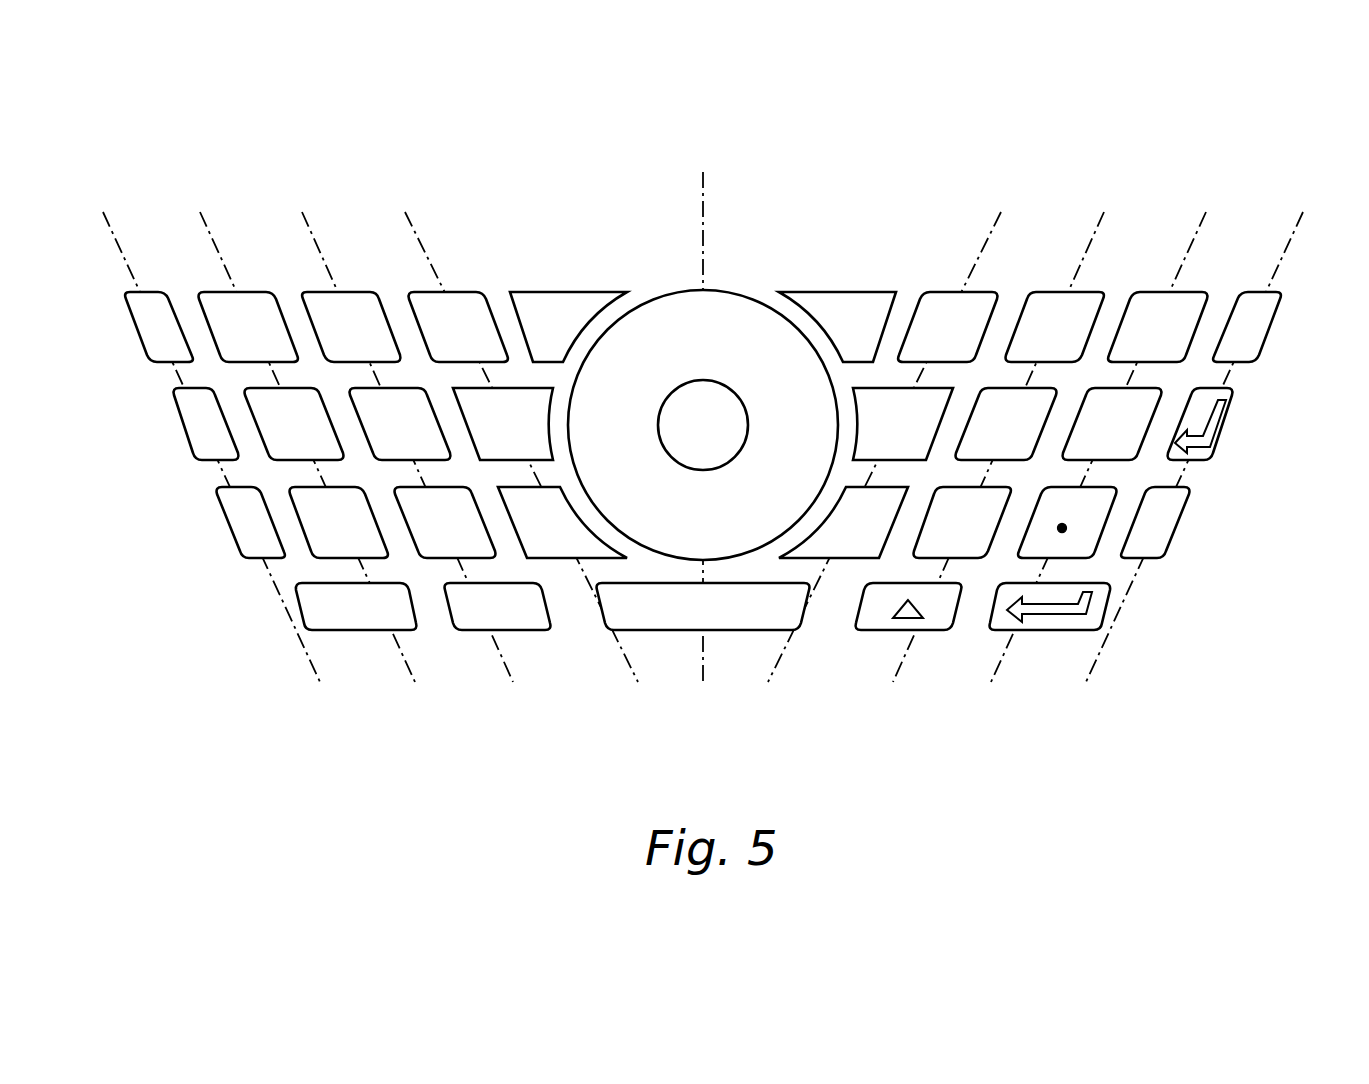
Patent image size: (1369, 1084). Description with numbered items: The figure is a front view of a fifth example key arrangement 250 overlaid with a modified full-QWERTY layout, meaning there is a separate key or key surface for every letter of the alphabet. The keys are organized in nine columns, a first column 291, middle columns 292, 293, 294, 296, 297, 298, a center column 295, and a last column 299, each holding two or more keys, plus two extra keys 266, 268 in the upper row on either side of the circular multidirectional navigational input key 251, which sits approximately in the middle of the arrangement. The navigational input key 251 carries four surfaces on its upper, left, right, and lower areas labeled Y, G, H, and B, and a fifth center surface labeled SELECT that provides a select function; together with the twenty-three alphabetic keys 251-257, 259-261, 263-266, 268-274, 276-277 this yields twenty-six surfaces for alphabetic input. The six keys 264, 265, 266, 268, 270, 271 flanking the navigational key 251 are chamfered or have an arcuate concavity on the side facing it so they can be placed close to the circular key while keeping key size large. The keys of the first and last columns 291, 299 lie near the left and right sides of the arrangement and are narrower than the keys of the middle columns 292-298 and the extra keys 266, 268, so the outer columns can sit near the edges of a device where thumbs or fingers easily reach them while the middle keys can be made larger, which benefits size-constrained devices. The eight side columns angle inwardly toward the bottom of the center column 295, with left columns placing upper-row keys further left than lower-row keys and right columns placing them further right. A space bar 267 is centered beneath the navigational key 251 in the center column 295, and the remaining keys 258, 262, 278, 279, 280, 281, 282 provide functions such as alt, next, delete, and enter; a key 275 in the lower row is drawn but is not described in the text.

The fifth example key arrangement 250 is at (262, 676).
The multidirectional navigational input key 251 is at (725, 348).
The alphabetic input key 252 is at (137, 331).
The alphabetic input key 253 is at (180, 410).
The alphabetic input key 254 is at (224, 515).
The alphabetic input key 255 is at (245, 292).
The alphabetic input key 256 is at (307, 388).
The alphabetic input key 257 is at (310, 555).
The function key 258 is at (365, 631).
The alphabetic input key 259 is at (350, 292).
The alphabetic input key 260 is at (412, 388).
The alphabetic input key 261 is at (425, 560).
The function key 262 is at (483, 632).
The alphabetic input key 263 is at (462, 292).
The alphabetic input key 264 is at (527, 388).
The alphabetic input key 265 is at (550, 560).
The extra key 266 is at (572, 292).
The space bar 267 is at (732, 630).
The extra key 268 is at (833, 292).
The alphabetic input key 269 is at (942, 292).
The alphabetic input key 270 is at (880, 388).
The alphabetic input key 271 is at (850, 560).
The alphabetic input key 272 is at (1062, 292).
The alphabetic input key 273 is at (987, 388).
The alphabetic input key 274 is at (978, 560).
The shift key 275 is at (920, 630).
The alphabetic input key 276 is at (1162, 292).
The alphabetic input key 277 is at (1094, 388).
The function key 278 is at (1097, 547).
The function key 279 is at (1040, 630).
The function key 280 is at (1265, 340).
The function key 281 is at (1230, 420).
The function key 282 is at (1186, 520).
The first column 291 is at (103, 212).
The middle column 292 is at (198, 212).
The middle column 293 is at (302, 212).
The middle column 294 is at (405, 212).
The center column 295 is at (703, 186).
The middle column 296 is at (1001, 212).
The middle column 297 is at (1105, 212).
The middle column 298 is at (1207, 212).
The last column 299 is at (1303, 212).